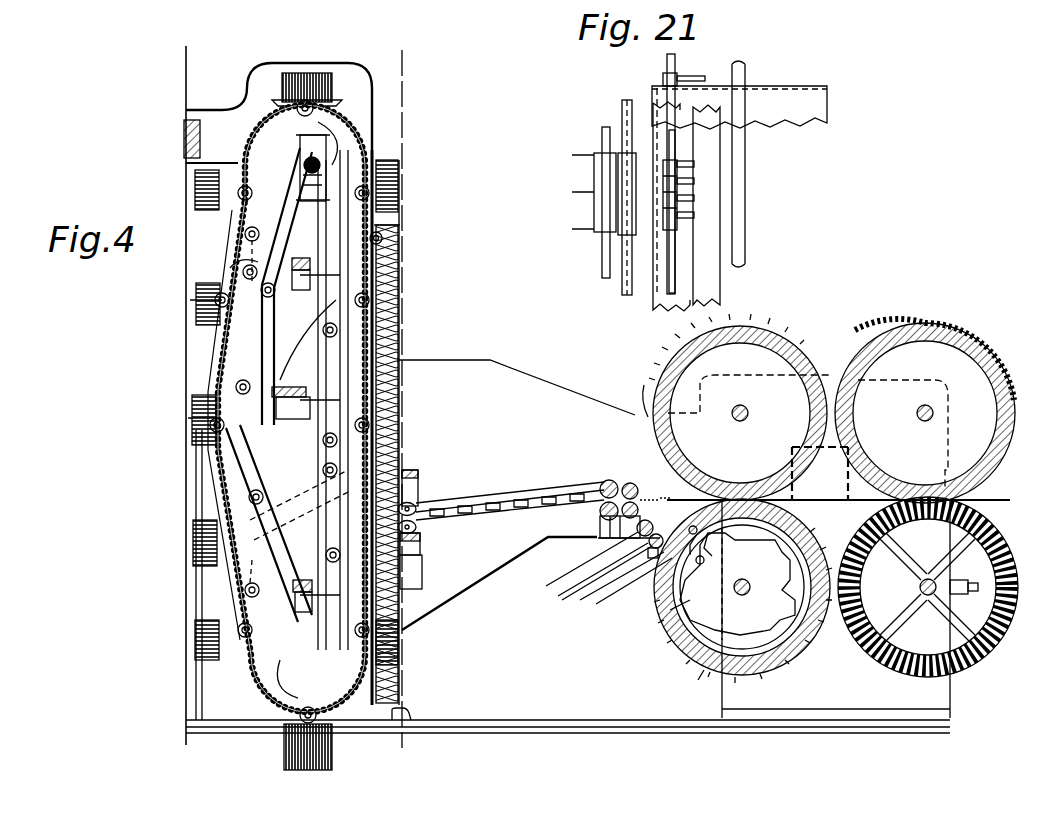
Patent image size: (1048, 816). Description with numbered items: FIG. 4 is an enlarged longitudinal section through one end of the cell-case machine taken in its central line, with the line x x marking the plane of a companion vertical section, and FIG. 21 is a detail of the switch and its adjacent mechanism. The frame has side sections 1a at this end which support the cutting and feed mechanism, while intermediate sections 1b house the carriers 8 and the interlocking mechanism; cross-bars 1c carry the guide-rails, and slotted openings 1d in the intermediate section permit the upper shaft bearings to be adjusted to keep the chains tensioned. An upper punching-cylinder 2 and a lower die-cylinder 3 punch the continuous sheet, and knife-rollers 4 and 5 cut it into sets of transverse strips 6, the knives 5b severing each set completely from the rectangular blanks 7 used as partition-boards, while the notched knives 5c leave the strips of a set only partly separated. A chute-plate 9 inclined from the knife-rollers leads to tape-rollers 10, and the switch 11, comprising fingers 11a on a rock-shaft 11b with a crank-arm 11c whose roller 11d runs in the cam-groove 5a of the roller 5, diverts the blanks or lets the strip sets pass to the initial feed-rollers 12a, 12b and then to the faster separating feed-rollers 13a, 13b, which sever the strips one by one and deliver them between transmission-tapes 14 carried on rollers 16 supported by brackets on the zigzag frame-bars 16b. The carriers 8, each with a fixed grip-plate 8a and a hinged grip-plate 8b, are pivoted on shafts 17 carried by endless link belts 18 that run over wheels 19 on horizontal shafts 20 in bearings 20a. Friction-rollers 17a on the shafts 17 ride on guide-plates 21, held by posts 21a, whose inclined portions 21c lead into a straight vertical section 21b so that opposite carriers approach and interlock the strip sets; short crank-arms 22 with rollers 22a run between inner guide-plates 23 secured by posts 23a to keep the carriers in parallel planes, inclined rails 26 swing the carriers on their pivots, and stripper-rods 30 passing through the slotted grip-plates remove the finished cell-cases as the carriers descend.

In FIG. 4, the side sections 1a is at (598, 546).
In FIG. 4, the intermediate sections 1b is at (278, 400).
In FIG. 4, the cross-bars 1c is at (296, 387).
In FIG. 4, the slotted openings 1d is at (330, 130).
In FIG. 4, the upper punching-cylinder 2 is at (925, 411).
In FIG. 4, the lower die-cylinder 3 is at (1010, 560).
In FIG. 4, the knife-roller 4 is at (741, 413).
In FIG. 4, the lower knife-roller 5 is at (742, 587).
In FIG. 21, the lower knife-roller 5 is at (739, 164).
In FIG. 4, the cam-groove 5a is at (740, 600).
In FIG. 4, the knives 5b is at (671, 523).
In FIG. 4, the knives 5c is at (785, 332).
In FIG. 4, the transverse strips 6 is at (512, 500).
In FIG. 4, the blanks or rectangular sheets 7 is at (598, 566).
In FIG. 4, the carriers 8 is at (410, 273).
In FIG. 4, the grip-plate 8a is at (398, 304).
In FIG. 4, the hinged grip-plate 8b is at (384, 250).
In FIG. 21, the chute-plate 9 is at (665, 300).
In FIG. 4, the tape-rollers 10 is at (636, 570).
In FIG. 4, the switch 11 is at (668, 490).
In FIG. 21, the switch 11 is at (706, 205).
In FIG. 21, the switch-fingers 11a is at (693, 195).
In FIG. 21, the rock-shaft 11b is at (676, 268).
In FIG. 4, the crank-arm 11c is at (717, 545).
In FIG. 21, the crank-arm 11c is at (684, 74).
In FIG. 4, the roller 11d is at (711, 584).
In FIG. 21, the roller 11d is at (700, 94).
In FIG. 4, the initial feed-roller 12a is at (633, 483).
In FIG. 21, the initial feed-roller 12a is at (628, 162).
In FIG. 4, the initial feed-roller 12b is at (652, 491).
In FIG. 4, the separating feed-roller 13a is at (604, 482).
In FIG. 21, the separating feed-roller 13a is at (594, 174).
In FIG. 4, the separating feed-roller 13b is at (608, 527).
In FIG. 4, the transmission-tapes 14 is at (480, 506).
In FIG. 4, the roller 16 is at (414, 504).
In FIG. 4, the zigzag frame-bars 16b is at (416, 470).
In FIG. 4, the shafts 17 is at (245, 186).
In FIG. 4, the friction-rollers 17a is at (320, 428).
In FIG. 4, the endless link belts 18 is at (285, 125).
In FIG. 4, the link-belt-carrying wheels 19 is at (334, 125).
In FIG. 4, the horizontal shafts 20 is at (330, 150).
In FIG. 4, the bearings 20a is at (405, 464).
In FIG. 4, the guide-plates 21 is at (300, 250).
In FIG. 4, the posts 21a is at (245, 236).
In FIG. 4, the straight vertical section 21b is at (226, 364).
In FIG. 4, the inclined section 21c is at (228, 268).
In FIG. 4, the crank-arms 22 is at (246, 382).
In FIG. 4, the rollers 22a is at (264, 498).
In FIG. 4, the guide-plates 23 is at (330, 300).
In FIG. 4, the posts 23a is at (258, 268).
In FIG. 4, the inclined guide-rails 26 is at (342, 350).
In FIG. 4, the stripper-rods 30 is at (196, 466).
In FIG. 4, the section line x x is at (396, 397).